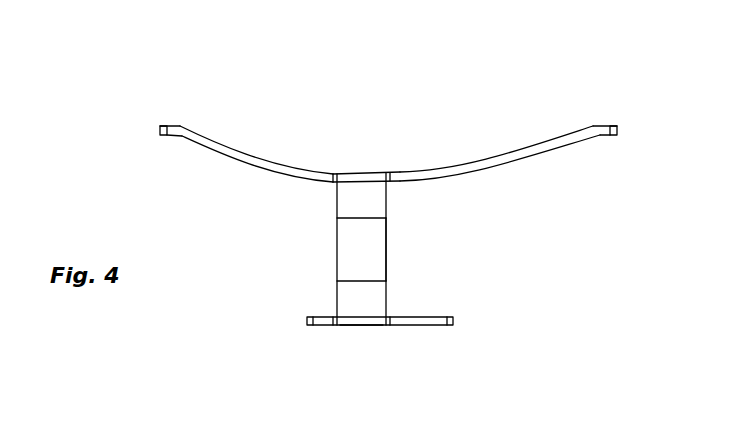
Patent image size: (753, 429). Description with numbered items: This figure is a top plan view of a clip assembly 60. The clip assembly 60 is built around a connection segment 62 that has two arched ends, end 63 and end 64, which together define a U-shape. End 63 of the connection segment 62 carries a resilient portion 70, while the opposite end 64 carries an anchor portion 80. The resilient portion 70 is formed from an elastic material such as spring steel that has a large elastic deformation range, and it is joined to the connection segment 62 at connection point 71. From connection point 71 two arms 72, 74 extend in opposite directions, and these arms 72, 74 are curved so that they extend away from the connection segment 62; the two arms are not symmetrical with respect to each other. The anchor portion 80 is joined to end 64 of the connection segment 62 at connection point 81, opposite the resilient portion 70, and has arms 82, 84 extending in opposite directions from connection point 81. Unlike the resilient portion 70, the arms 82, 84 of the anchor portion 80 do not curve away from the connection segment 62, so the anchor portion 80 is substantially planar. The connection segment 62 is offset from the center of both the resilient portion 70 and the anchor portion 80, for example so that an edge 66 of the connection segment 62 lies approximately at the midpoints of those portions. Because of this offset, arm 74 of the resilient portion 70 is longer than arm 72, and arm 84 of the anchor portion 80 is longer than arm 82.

The clip assembly 60 is at (572, 130).
The resilient portion 70 is at (247, 148).
The connection point 71 is at (365, 178).
The arm 72 is at (175, 133).
The arm 74 is at (603, 133).
The connection segment 62 is at (375, 251).
The end 63 is at (352, 183).
The edge 66 is at (388, 226).
The end 64 is at (352, 316).
The anchor portion 80 is at (291, 321).
The connection point 81 is at (363, 326).
The arm 82 is at (313, 326).
The arm 84 is at (428, 326).